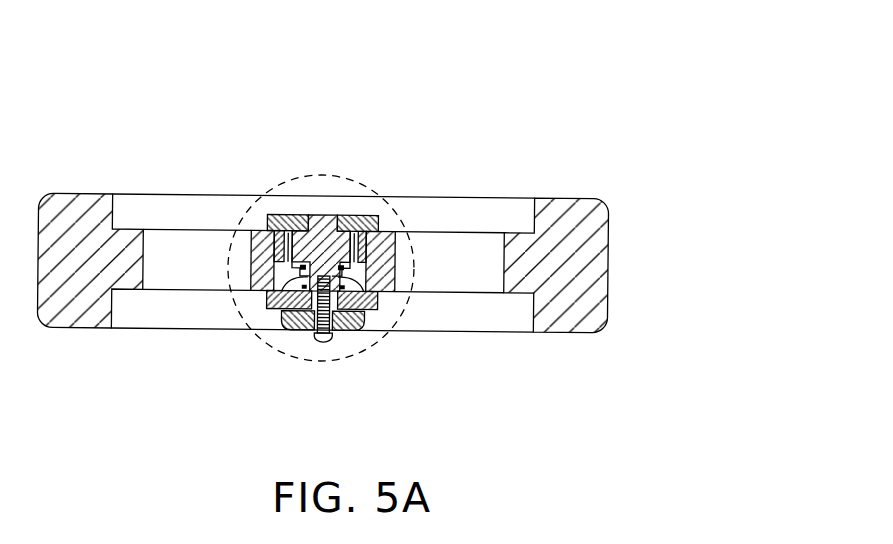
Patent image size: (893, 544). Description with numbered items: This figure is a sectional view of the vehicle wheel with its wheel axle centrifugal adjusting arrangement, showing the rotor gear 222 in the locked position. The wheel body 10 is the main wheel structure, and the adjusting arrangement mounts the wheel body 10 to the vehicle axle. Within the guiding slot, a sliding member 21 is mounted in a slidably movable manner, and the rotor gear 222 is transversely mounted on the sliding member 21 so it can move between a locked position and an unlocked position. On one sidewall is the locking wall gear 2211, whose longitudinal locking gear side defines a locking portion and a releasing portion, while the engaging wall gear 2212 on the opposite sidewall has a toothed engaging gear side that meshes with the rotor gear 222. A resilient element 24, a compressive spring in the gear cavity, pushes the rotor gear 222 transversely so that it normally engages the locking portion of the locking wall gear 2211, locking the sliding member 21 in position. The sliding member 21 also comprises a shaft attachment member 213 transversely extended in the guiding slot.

The wheel body 10 is at (475, 248).
The sliding member 21 is at (287, 215).
The rotor gear 222 is at (327, 216).
The engaging wall gear 2212 is at (272, 242).
The locking wall gear 2211 is at (393, 235).
The resilient element 24 is at (305, 275).
The shaft attachment member 213 is at (293, 336).